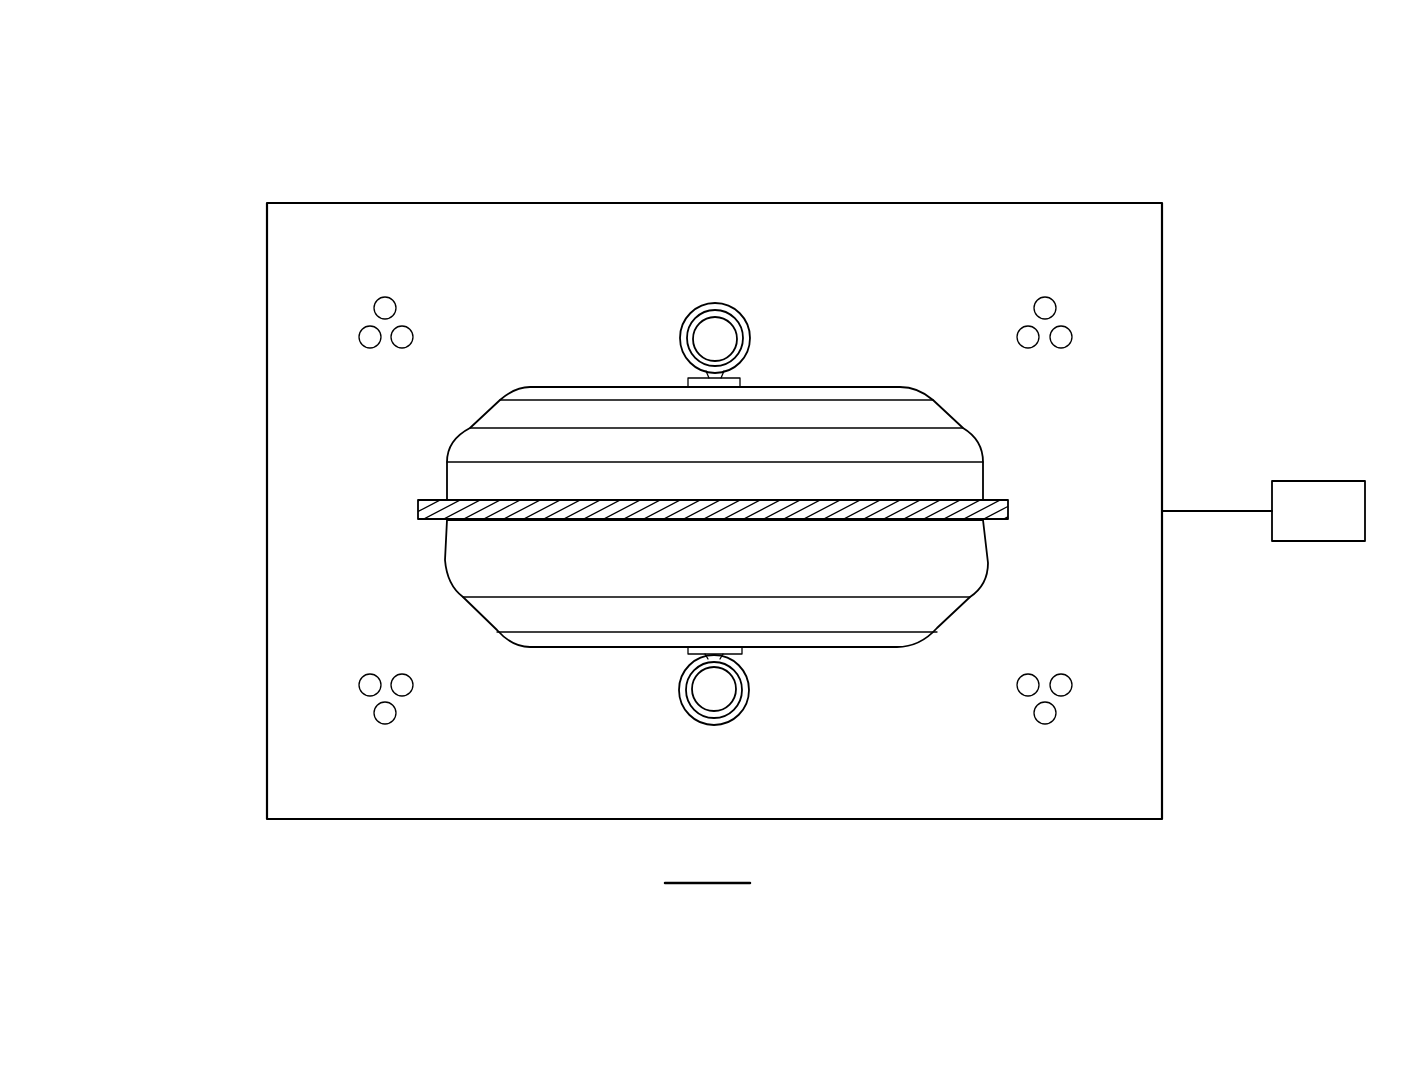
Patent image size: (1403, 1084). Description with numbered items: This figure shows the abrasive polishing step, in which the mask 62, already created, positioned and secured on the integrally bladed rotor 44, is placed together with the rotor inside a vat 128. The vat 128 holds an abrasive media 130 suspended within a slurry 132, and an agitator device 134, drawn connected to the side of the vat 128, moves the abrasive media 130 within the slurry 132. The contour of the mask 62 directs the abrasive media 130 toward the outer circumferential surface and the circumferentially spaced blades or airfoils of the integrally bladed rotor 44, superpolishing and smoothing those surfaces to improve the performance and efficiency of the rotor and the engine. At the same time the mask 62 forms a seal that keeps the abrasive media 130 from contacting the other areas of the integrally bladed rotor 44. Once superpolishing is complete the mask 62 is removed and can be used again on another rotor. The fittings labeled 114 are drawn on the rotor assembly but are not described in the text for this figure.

The vat 128 is at (816, 491).
The abrasive media 130 is at (377, 717).
The slurry 132 is at (605, 781).
The agitator device 134 is at (1342, 525).
The mask 62 is at (960, 446).
The integrally bladed rotor 44 is at (1008, 521).
The ring fittings 114 is at (687, 334).